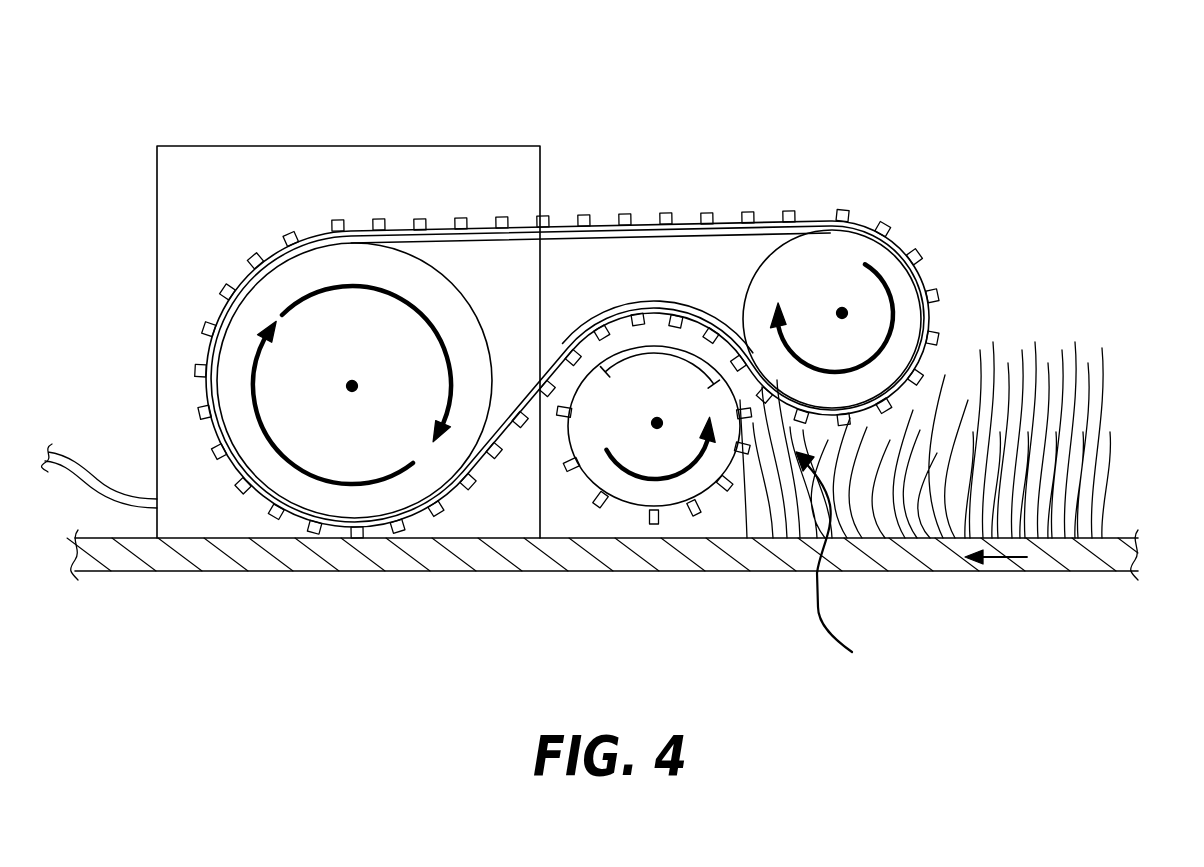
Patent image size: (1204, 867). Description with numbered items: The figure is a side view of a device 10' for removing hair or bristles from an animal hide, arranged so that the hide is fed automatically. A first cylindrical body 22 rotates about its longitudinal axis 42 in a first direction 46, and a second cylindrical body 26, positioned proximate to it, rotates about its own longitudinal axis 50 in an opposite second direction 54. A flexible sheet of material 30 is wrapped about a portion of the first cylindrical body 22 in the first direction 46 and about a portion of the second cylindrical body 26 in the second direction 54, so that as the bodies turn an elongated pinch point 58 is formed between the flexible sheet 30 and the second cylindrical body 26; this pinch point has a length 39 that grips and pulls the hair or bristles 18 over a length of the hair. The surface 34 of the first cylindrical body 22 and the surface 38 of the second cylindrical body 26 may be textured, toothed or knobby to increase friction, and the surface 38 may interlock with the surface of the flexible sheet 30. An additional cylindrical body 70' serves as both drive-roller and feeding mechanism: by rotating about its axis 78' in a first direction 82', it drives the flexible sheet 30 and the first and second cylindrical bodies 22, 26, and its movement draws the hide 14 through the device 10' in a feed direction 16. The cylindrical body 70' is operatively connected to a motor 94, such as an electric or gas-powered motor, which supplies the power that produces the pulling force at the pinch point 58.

The device for animal hair removal 10' is at (580, 341).
The hide 14 is at (437, 557).
The feed direction 16 is at (998, 562).
The hair or bristles 18 is at (1047, 452).
The first cylindrical body 22 is at (828, 253).
The second cylindrical body 26 is at (627, 490).
The flexible sheet of material 30 is at (603, 220).
The surface of first cylindrical body 34 is at (884, 224).
The surface of second cylindrical body 38 is at (617, 323).
The length of pinch point 39 is at (665, 348).
The longitudinal axis of first cylindrical body 42 is at (841, 313).
The first direction 46 is at (778, 336).
The longitudinal axis of second cylindrical body 50 is at (657, 423).
The second direction 54 is at (683, 468).
The elongated pinch point 58 is at (837, 567).
The additional cylindrical body 70' is at (294, 385).
The axis of additional cylindrical body 78' is at (339, 345).
The first direction of rotation 82' is at (321, 407).
The motor 94 is at (215, 146).